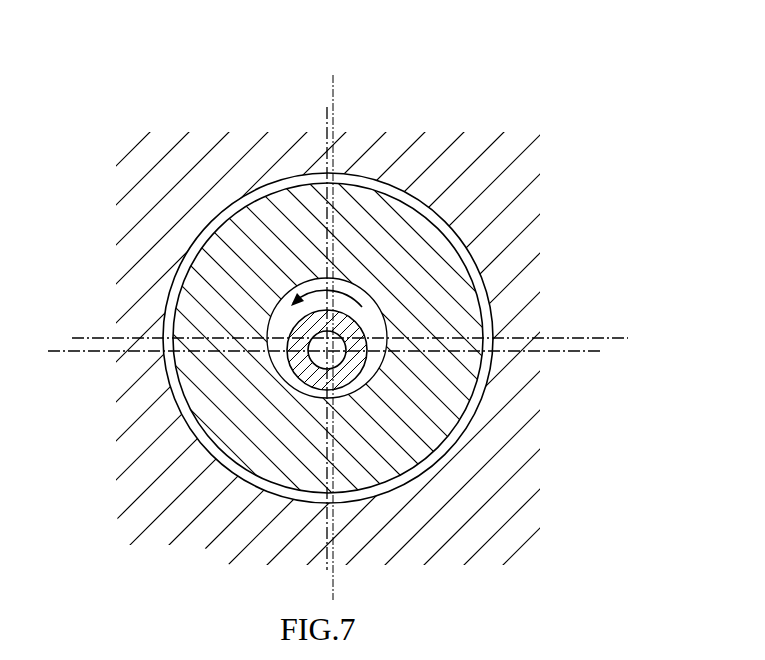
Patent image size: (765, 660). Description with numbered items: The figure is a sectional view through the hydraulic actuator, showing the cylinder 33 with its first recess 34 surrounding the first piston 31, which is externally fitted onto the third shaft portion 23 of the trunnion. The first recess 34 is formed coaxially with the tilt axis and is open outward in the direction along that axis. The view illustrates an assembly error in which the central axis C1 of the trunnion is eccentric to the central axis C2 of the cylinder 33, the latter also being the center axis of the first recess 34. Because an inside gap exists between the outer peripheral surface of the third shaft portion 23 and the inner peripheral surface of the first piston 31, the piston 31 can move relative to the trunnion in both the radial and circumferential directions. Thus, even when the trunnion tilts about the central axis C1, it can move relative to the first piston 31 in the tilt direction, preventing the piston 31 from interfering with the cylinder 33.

The cylinder 33 is at (173, 183).
The first recess 34 is at (190, 252).
The first piston 31 is at (458, 261).
The third shaft portion 23 is at (348, 365).
The central axis of the trunnion C1 is at (305, 362).
The central axis of the cylinder C2 is at (372, 308).